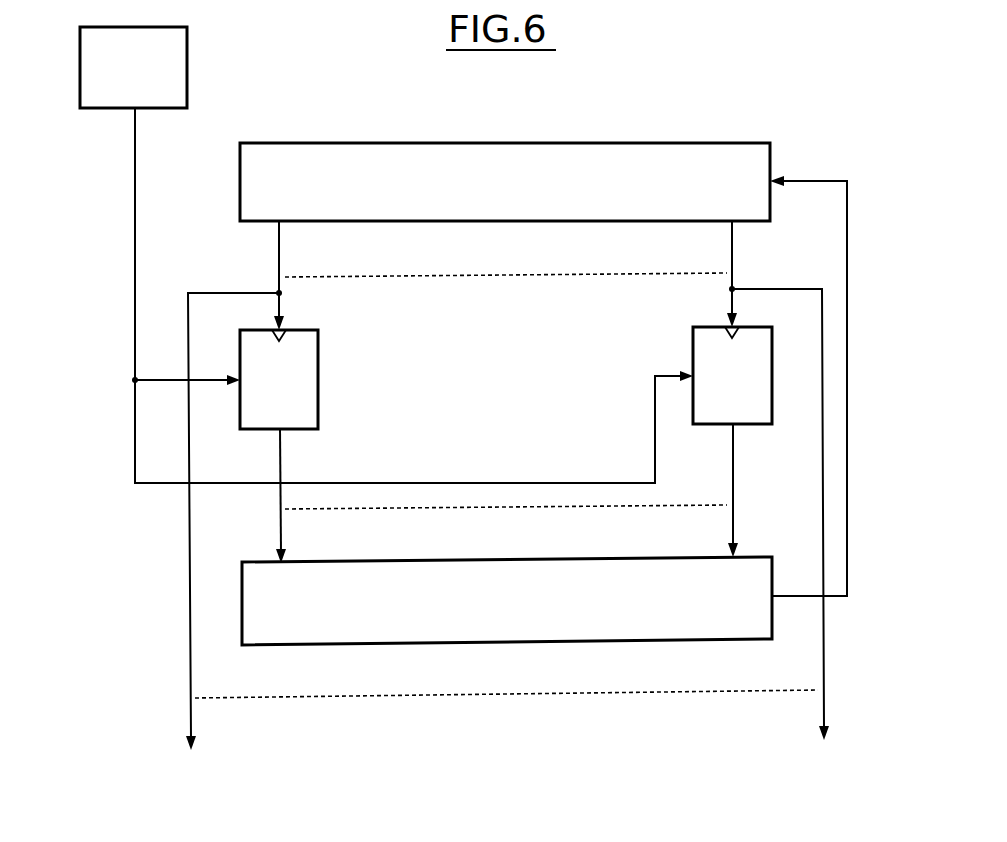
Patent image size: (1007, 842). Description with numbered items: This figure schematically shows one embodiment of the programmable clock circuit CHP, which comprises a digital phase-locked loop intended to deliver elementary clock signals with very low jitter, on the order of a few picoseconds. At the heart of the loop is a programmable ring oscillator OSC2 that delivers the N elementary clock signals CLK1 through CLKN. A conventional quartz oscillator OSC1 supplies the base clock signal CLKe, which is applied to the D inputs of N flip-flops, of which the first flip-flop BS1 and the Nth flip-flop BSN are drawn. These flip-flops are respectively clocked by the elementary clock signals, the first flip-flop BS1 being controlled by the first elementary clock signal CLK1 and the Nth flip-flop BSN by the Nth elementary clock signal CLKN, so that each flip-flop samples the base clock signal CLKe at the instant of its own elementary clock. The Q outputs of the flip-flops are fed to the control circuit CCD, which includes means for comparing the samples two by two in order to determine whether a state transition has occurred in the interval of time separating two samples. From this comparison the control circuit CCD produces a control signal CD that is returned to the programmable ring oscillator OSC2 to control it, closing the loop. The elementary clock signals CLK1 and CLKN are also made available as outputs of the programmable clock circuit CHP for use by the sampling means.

The quartz oscillator OSC1 is at (133, 67).
The programmable ring oscillator OSC2 is at (505, 182).
The control circuit CCD is at (507, 601).
The first flip-flop BS1 is at (318, 343).
The Nth flip-flop BSN is at (693, 342).
The programmable clock circuit CHP is at (840, 112).
The control signal CD is at (847, 214).
The base clock signal CLKe is at (135, 205).
The first elementary clock signal CLK1 is at (279, 263).
The Nth elementary clock signal CLKN is at (732, 258).